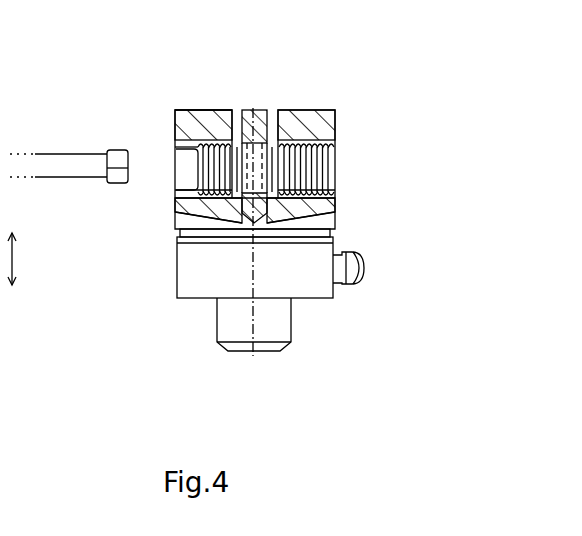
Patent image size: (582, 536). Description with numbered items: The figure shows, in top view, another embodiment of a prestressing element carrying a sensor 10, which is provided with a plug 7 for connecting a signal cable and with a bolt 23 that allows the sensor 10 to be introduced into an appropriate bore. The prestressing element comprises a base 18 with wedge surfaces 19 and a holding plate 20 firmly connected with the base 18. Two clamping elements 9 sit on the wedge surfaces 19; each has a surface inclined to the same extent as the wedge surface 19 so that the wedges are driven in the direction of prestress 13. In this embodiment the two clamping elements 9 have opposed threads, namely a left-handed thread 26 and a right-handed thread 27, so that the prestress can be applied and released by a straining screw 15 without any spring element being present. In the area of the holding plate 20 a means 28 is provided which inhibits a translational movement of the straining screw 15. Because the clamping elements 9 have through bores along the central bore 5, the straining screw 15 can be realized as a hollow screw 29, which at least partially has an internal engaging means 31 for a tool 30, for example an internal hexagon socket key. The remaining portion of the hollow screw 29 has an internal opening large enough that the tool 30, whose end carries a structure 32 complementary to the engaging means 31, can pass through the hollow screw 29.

The central bore 5 is at (362, 140).
The plug 7 is at (362, 263).
The clamping element 9 is at (203, 110).
The sensor 10 is at (187, 283).
The direction of prestress 13 is at (33, 259).
The straining screw 15 is at (323, 137).
The base 18 is at (182, 235).
The wedge surface 19 is at (177, 212).
The holding plate 20 is at (262, 110).
The bolt 23 is at (282, 320).
The left-handed thread 26 is at (175, 128).
The right-handed thread 27 is at (300, 140).
The means to prevent translation 28 is at (238, 143).
The hollow screw 29 is at (366, 148).
The tool 30 is at (54, 163).
The engaging means 31 is at (176, 181).
The structure corresponding to the engaging means 32 is at (108, 182).